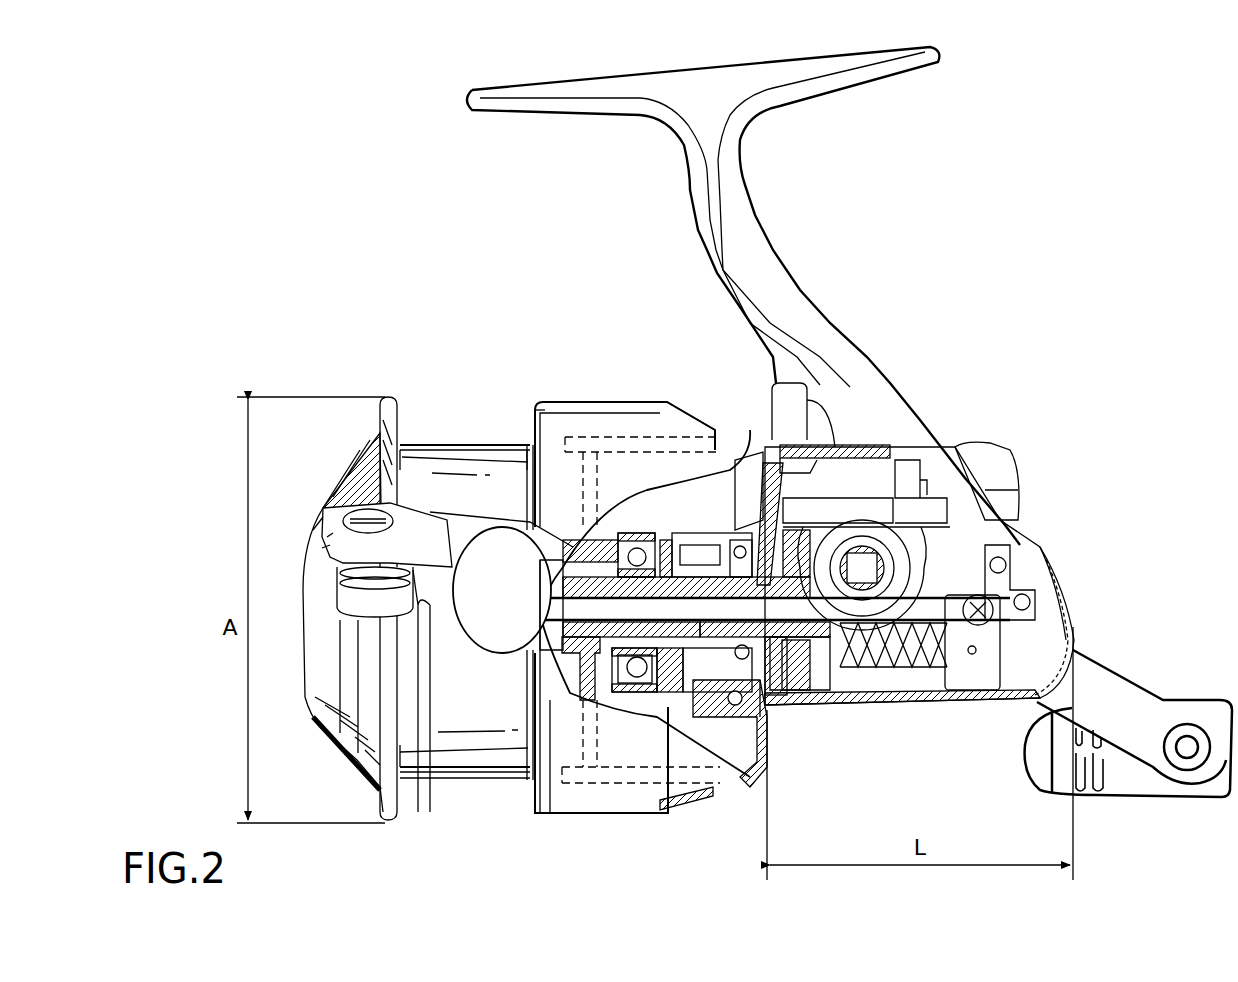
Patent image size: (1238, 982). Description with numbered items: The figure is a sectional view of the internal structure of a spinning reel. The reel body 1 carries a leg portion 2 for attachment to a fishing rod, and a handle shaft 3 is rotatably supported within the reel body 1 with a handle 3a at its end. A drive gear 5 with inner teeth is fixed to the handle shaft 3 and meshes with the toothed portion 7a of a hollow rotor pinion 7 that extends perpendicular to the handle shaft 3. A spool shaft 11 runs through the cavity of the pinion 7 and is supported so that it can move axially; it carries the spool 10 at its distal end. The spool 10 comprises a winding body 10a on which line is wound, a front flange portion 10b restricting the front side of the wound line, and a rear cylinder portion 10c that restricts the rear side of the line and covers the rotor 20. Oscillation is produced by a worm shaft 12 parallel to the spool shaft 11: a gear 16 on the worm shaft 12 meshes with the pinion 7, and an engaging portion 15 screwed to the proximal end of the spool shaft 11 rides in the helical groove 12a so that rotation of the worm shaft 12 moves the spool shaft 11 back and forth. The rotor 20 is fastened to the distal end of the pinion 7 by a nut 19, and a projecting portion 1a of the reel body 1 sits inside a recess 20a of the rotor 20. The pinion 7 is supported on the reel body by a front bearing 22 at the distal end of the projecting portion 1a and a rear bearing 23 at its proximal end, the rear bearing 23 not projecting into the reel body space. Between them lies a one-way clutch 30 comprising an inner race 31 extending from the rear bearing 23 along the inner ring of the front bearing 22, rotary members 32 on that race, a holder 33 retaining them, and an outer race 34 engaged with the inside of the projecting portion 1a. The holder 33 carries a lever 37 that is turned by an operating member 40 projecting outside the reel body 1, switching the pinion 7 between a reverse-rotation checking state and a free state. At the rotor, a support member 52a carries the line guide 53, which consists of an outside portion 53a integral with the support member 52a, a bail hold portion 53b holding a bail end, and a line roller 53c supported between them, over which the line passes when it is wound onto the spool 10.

The reel body 1 is at (1023, 460).
The projecting portion 1a is at (716, 735).
The leg portion 2 is at (770, 250).
The handle shaft 3 is at (1015, 513).
The handle 3a is at (1140, 700).
The drive gear 5 is at (1040, 552).
The rotor pinion 7 is at (532, 783).
The toothed portion 7a is at (840, 445).
The spool 10 is at (422, 832).
The winding body 10a is at (483, 448).
The front flange portion 10b is at (393, 397).
The rear cylinder portion 10c is at (537, 400).
The spool shaft 11 is at (507, 640).
The worm shaft 12 is at (880, 660).
The helical groove 12a is at (903, 657).
The engaging portion 15 is at (1070, 650).
The gear 16 is at (800, 690).
The nut 19 is at (525, 495).
The rotor 20 is at (580, 785).
The recess 20a is at (650, 785).
The front bearing 22 is at (617, 530).
The rear bearing 23 is at (745, 520).
The one-way clutch 30 is at (682, 712).
The inner race 31 is at (748, 698).
The rotary members 32 is at (690, 540).
The holder 33 is at (658, 510).
The outer race 34 is at (667, 693).
The lever 37 is at (650, 510).
The operating member 40 is at (983, 470).
The support member 52a is at (450, 527).
The line guide 53 is at (330, 625).
The outside portion 53a is at (330, 527).
The bail hold portion 53b is at (335, 640).
The line roller 53c is at (323, 553).